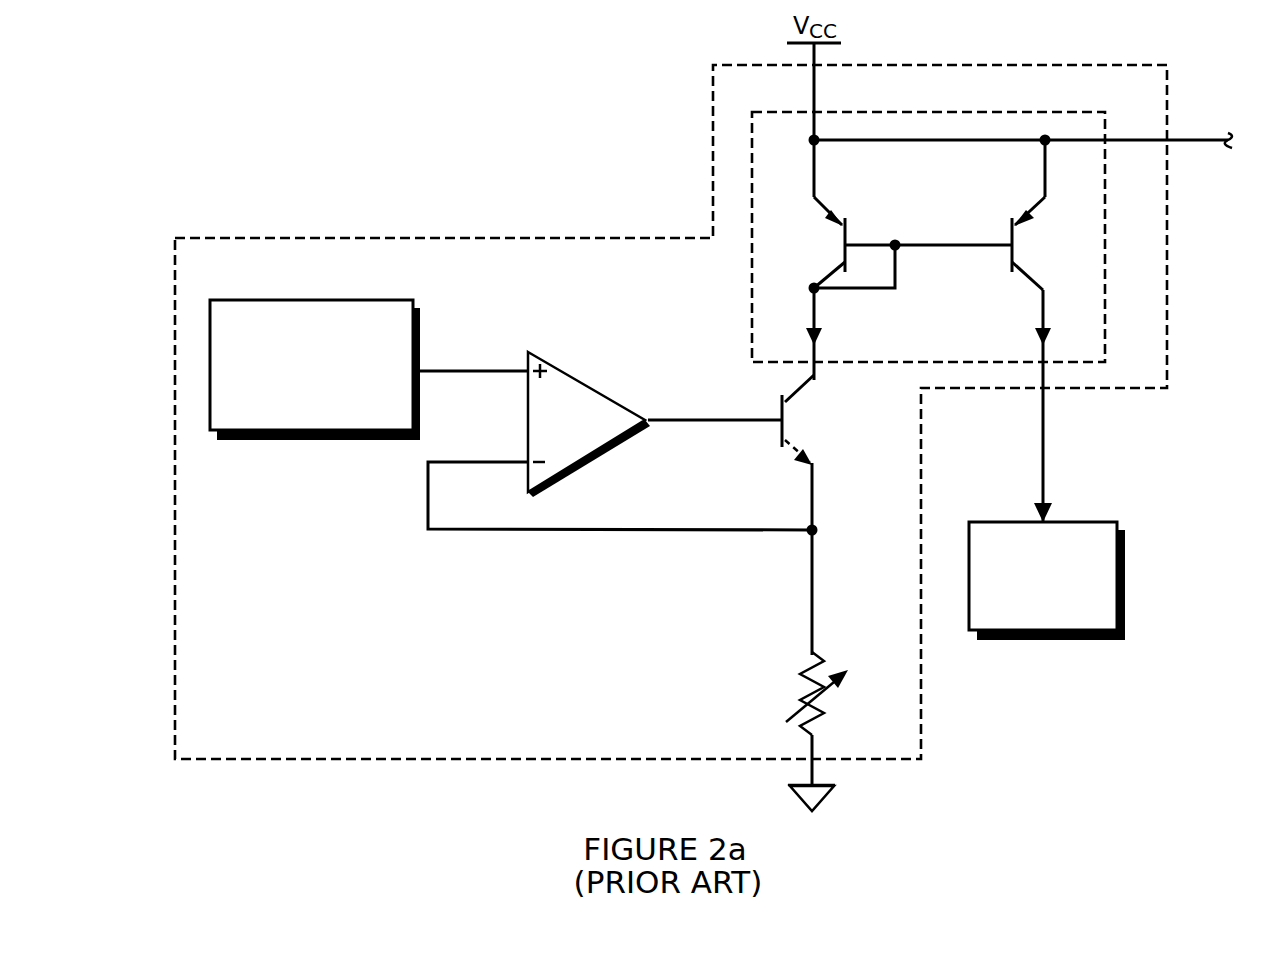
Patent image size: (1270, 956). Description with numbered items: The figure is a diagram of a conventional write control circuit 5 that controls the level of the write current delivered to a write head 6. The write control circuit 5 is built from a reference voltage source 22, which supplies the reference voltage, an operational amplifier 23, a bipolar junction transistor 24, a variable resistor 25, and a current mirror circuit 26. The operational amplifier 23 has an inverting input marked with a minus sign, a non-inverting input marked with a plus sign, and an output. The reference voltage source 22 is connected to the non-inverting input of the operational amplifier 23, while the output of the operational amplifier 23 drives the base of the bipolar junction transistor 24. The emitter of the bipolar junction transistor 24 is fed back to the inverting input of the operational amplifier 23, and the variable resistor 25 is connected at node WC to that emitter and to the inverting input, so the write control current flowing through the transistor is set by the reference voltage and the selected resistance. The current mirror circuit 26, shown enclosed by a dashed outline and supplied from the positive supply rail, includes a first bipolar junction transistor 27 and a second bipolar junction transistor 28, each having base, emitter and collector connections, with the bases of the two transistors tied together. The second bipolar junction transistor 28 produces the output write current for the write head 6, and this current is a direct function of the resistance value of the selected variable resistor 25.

The write control circuit 5 is at (594, 238).
The write head 6 is at (1095, 545).
The reference voltage source 22 is at (340, 305).
The operational amplifier 23 is at (588, 392).
The bipolar junction transistor 24 is at (781, 437).
The variable resistor 25 is at (800, 673).
The current mirror circuit 26 is at (1013, 113).
The first bipolar junction transistor 27 is at (858, 224).
The second bipolar junction transistor 28 is at (1009, 254).